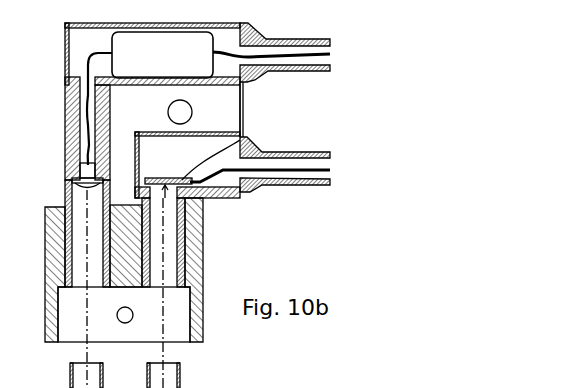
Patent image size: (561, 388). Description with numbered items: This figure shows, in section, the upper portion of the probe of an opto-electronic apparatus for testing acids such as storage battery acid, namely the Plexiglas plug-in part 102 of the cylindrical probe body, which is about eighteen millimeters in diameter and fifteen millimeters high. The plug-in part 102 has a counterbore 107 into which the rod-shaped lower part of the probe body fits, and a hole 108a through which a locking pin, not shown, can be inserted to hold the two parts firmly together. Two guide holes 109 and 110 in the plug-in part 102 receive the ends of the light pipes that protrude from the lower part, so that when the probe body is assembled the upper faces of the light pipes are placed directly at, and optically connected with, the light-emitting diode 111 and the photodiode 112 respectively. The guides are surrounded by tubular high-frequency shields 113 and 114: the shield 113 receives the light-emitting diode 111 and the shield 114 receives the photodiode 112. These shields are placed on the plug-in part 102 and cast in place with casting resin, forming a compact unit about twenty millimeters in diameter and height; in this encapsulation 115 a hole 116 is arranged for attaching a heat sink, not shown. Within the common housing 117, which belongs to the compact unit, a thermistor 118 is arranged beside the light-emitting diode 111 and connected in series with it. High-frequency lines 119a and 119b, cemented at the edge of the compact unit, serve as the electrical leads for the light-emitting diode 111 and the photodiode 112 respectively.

The plug-in part 102 is at (48, 253).
The counterbore 107 is at (182, 338).
The hole 108a is at (117, 316).
The guide hole 109 is at (78, 273).
The guide hole 110 is at (170, 263).
The light-emitting diode 111 is at (75, 182).
The photodiode 112 is at (172, 178).
The high-frequency shield 113 is at (65, 133).
The high-frequency shield 114 is at (185, 240).
The encapsulation 115 is at (220, 124).
The hole 116 is at (192, 108).
The common housing 117 is at (65, 57).
The thermistor 118 is at (118, 40).
The high-frequency line 119a is at (285, 70).
The high-frequency line 119b is at (279, 153).